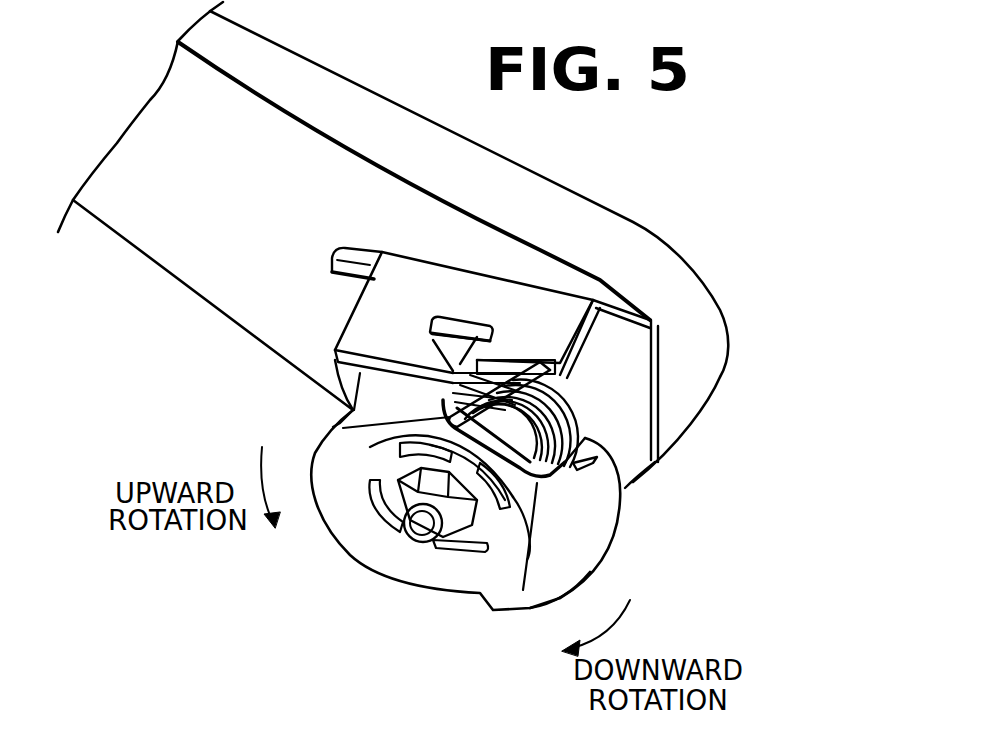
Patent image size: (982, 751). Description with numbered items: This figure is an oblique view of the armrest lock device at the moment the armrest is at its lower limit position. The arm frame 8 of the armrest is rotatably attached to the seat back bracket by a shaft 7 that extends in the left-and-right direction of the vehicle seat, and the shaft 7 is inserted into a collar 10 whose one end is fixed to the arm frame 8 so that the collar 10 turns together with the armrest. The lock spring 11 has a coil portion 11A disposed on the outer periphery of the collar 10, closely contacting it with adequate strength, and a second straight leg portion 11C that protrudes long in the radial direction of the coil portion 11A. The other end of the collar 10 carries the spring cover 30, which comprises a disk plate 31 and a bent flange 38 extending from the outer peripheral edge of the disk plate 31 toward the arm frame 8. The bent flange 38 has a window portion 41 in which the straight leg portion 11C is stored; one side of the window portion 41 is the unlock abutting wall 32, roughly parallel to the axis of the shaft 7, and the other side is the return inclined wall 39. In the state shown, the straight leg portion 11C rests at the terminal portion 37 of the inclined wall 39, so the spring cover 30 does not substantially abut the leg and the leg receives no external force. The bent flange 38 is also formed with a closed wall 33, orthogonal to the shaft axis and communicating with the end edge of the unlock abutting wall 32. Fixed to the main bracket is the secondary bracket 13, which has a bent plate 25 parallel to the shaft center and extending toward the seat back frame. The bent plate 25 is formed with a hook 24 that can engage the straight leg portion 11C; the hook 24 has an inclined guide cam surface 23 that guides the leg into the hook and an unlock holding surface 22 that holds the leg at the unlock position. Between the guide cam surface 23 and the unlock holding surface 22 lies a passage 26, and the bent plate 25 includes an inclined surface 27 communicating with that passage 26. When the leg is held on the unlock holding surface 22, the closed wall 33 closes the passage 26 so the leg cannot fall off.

The shaft 7 is at (423, 527).
The arm frame 8 is at (609, 222).
The collar 10 is at (470, 547).
The lock spring 11 is at (583, 415).
The coil portion 11A is at (590, 437).
The second straight leg portion 11C is at (560, 383).
The secondary bracket 13 is at (667, 388).
The unlock holding surface 22 is at (492, 335).
The inclined guide cam surface 23 is at (433, 357).
The hook 24 is at (467, 337).
The bent plate 25 is at (373, 290).
The passage 26 is at (433, 320).
The inclined surface 27 is at (500, 363).
The spring cover 30 is at (427, 588).
The disk plate 31 is at (403, 557).
The unlock abutting wall 32 is at (623, 487).
The closed wall 33 is at (617, 530).
The terminal portion 37 is at (330, 373).
The bent flange 38 is at (595, 548).
The return inclined wall 39 is at (340, 423).
The window portion 41 is at (523, 590).